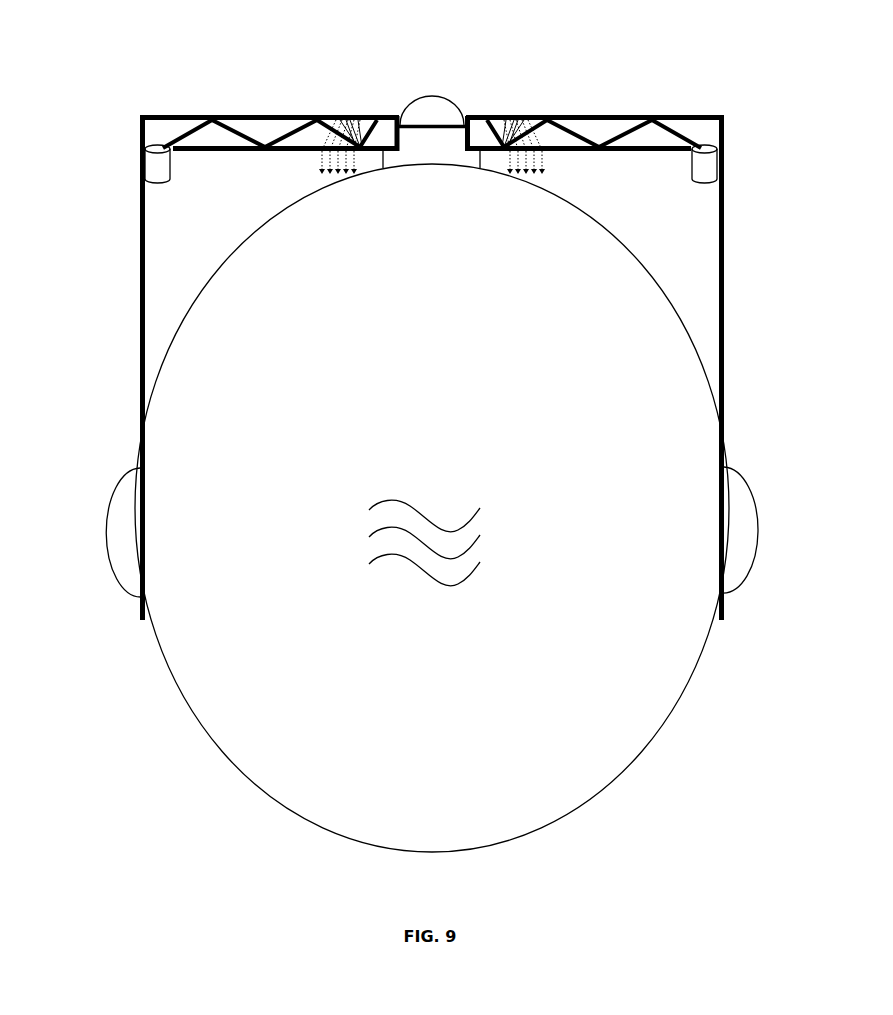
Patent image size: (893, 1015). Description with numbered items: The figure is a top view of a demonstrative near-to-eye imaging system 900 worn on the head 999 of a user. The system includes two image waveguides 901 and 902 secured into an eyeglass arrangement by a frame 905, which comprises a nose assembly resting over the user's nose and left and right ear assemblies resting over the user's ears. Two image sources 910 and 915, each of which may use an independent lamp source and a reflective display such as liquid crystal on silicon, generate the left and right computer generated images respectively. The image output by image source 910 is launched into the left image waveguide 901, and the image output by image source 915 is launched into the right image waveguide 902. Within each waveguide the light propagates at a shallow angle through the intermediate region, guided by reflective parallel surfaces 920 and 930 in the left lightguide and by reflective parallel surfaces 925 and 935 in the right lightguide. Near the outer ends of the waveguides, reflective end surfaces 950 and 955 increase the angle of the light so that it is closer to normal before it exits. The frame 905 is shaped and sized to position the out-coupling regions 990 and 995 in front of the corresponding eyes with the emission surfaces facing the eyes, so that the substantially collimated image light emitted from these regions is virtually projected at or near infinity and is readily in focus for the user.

The near-to-eye imaging system 900 is at (36, 101).
The image waveguide 901 is at (269, 115).
The image waveguide 902 is at (619, 115).
The frame 905 is at (140, 357).
The image source 910 is at (142, 182).
The image source 915 is at (723, 187).
The reflective parallel surface 920 is at (218, 152).
The reflective parallel surface 925 is at (642, 152).
The reflective parallel surface 930 is at (258, 115).
The reflective parallel surface 935 is at (602, 115).
The reflective end surface 950 is at (376, 115).
The reflective end surface 955 is at (487, 115).
The out-coupling region 990 is at (333, 149).
The out-coupling region 995 is at (528, 151).
The head 999 is at (432, 501).